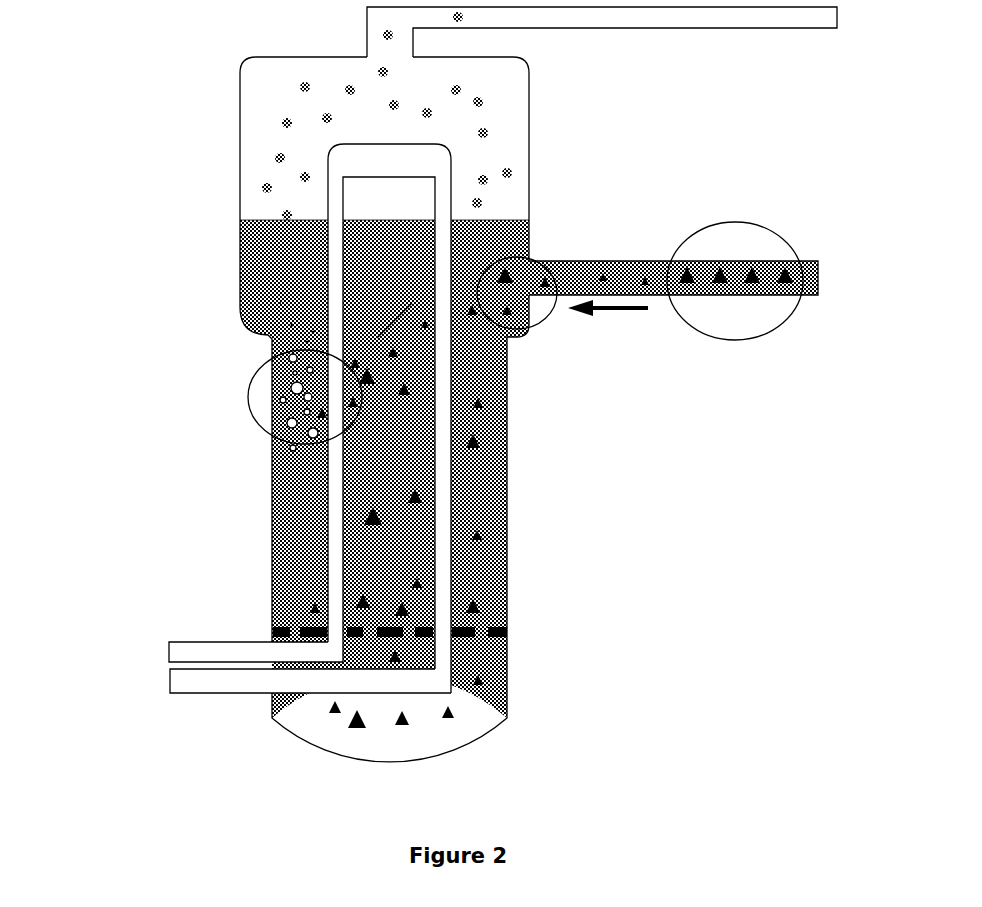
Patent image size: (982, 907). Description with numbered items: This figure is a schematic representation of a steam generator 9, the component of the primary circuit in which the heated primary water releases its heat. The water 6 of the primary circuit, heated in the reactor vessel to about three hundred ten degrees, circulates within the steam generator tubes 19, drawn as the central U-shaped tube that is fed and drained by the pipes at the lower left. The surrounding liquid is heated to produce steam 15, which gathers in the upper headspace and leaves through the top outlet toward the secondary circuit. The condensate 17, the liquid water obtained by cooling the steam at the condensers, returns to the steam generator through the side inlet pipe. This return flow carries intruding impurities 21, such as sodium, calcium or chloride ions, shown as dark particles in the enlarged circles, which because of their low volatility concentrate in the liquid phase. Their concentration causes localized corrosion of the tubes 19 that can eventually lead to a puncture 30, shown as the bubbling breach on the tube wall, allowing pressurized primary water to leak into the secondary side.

The water 6 is at (170, 682).
The steam generator 9 is at (240, 227).
The steam 15 is at (492, 92).
The condensate 17 is at (817, 291).
The steam generator tubes 19 is at (450, 373).
The impurities 21 is at (673, 250).
The puncture 30 is at (248, 388).